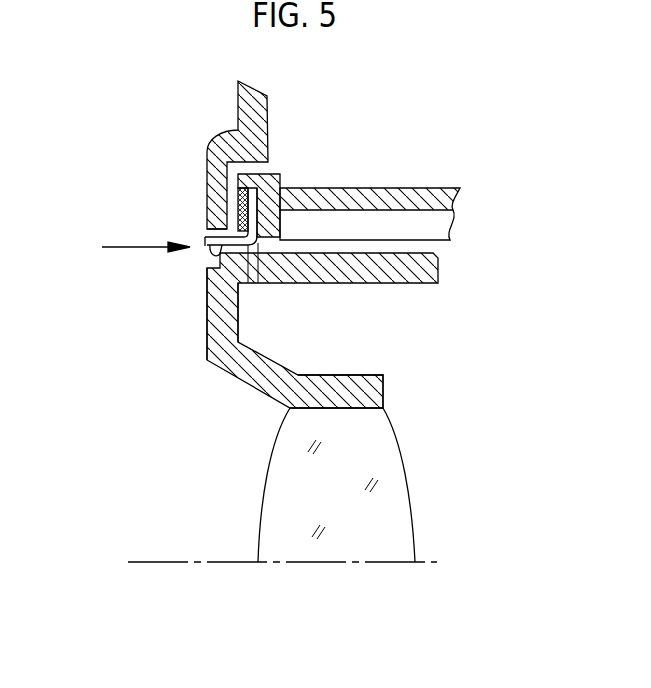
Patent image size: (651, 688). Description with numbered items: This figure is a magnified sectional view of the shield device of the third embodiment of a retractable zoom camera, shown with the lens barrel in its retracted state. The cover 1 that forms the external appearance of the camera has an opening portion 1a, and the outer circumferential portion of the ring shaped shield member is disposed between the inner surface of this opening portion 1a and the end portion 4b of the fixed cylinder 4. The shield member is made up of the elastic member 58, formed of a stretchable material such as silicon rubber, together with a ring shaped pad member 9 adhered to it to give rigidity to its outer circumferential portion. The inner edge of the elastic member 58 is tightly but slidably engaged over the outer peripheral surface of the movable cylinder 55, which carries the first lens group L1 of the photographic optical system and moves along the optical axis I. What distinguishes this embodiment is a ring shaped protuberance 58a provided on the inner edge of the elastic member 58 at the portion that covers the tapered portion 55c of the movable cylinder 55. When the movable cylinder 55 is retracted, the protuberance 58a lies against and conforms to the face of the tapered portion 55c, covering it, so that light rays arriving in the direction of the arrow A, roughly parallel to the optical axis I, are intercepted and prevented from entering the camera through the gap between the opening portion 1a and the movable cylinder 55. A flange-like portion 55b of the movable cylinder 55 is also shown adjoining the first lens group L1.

The cover 1 is at (242, 109).
The opening portion 1a is at (207, 227).
The pad member 9 is at (227, 197).
The elastic member 58 is at (240, 210).
The protuberance 58a is at (207, 250).
The fixed cylinder 4 is at (413, 192).
The end portion 4b is at (286, 166).
The movable cylinder 55 is at (245, 360).
The flange portion of lens holder 55b is at (361, 380).
The tapered portion 55c is at (218, 280).
The first lens group L1 is at (285, 513).
The optical axis I is at (220, 567).
The arrow A is at (131, 246).